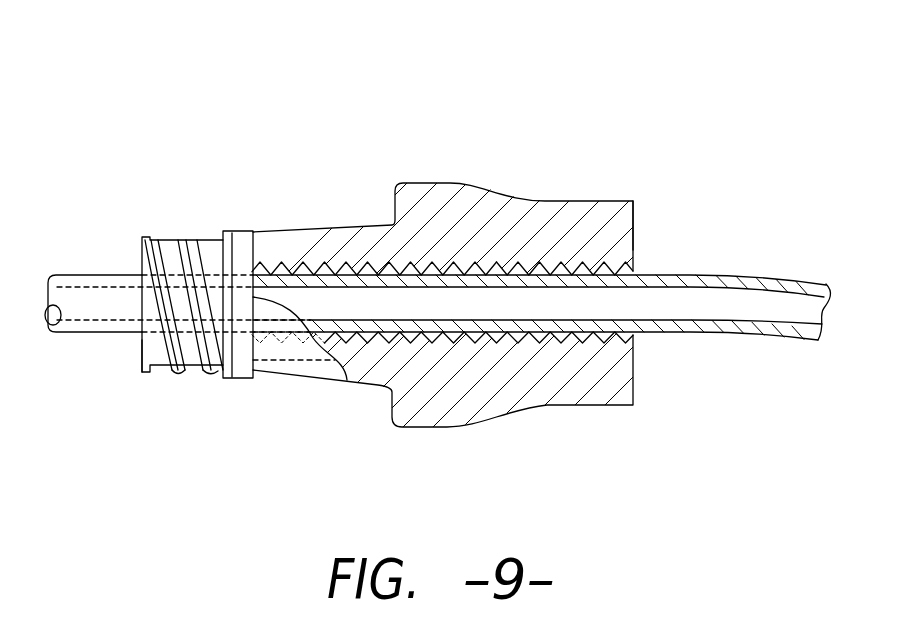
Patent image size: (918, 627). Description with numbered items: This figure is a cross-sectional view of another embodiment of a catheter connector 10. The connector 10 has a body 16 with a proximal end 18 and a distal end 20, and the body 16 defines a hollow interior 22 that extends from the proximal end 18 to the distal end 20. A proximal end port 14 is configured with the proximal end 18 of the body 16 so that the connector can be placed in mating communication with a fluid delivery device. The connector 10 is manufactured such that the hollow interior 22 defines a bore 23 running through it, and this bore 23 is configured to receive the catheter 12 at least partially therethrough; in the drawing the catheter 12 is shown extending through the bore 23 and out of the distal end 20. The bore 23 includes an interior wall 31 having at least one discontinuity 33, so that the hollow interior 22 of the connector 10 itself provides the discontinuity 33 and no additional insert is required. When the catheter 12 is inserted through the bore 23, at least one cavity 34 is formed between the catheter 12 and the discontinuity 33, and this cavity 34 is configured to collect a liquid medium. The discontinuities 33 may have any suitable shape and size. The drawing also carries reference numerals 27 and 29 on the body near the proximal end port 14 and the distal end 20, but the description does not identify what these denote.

The catheter connector 10 is at (640, 122).
The catheter 12 is at (770, 274).
The proximal end port 14 is at (207, 236).
The body 16 is at (360, 221).
The proximal end 18 is at (139, 347).
The distal end 20 is at (636, 377).
The hollow interior 22 is at (468, 303).
The bore 23 is at (412, 316).
The flange 27 is at (235, 233).
The body end face 29 is at (635, 240).
The interior wall 31 is at (548, 262).
The discontinuity 33 is at (455, 340).
The cavity 34 is at (420, 258).